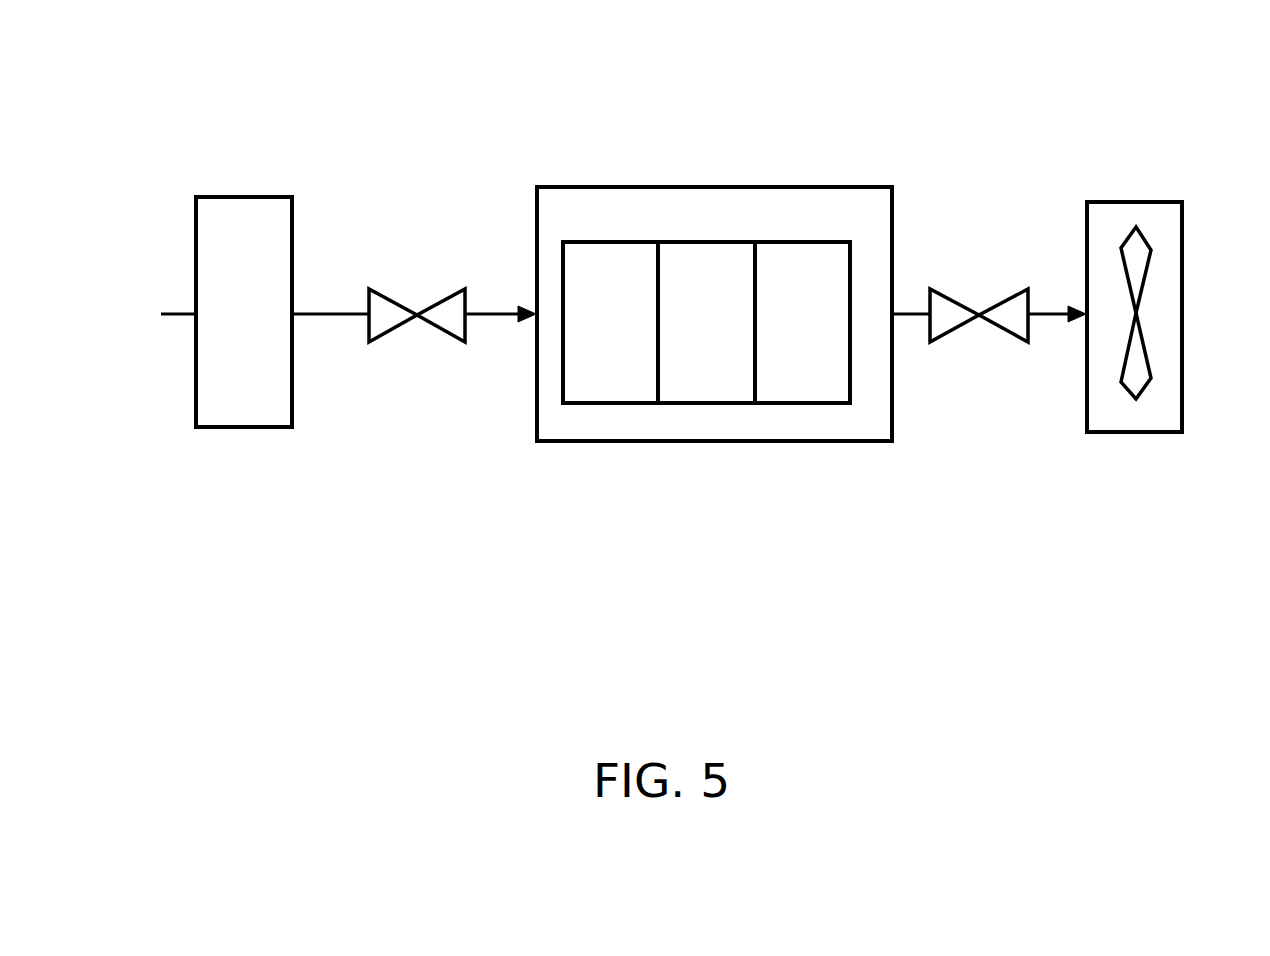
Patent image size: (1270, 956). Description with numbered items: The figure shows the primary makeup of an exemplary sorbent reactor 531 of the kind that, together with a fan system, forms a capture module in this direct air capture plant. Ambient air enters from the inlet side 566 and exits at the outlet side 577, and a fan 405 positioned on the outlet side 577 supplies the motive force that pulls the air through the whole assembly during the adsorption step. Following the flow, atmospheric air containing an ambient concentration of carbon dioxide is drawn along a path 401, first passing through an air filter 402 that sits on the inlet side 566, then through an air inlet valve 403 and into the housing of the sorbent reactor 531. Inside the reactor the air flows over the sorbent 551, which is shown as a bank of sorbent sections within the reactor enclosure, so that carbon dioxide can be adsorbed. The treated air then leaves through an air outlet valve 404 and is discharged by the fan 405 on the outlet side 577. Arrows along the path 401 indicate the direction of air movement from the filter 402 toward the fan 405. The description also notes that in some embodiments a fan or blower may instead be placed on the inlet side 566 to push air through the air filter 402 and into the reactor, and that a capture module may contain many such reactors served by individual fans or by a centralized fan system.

The inlet side 566 is at (160, 222).
The outlet side 577 is at (1211, 278).
The path 401 is at (343, 318).
The air filter 402 is at (295, 252).
The air inlet valve 403 is at (435, 331).
The air outlet valve 404 is at (945, 345).
The fan 405 is at (1136, 433).
The sorbent reactor 531 is at (860, 443).
The sorbent 551 is at (750, 322).